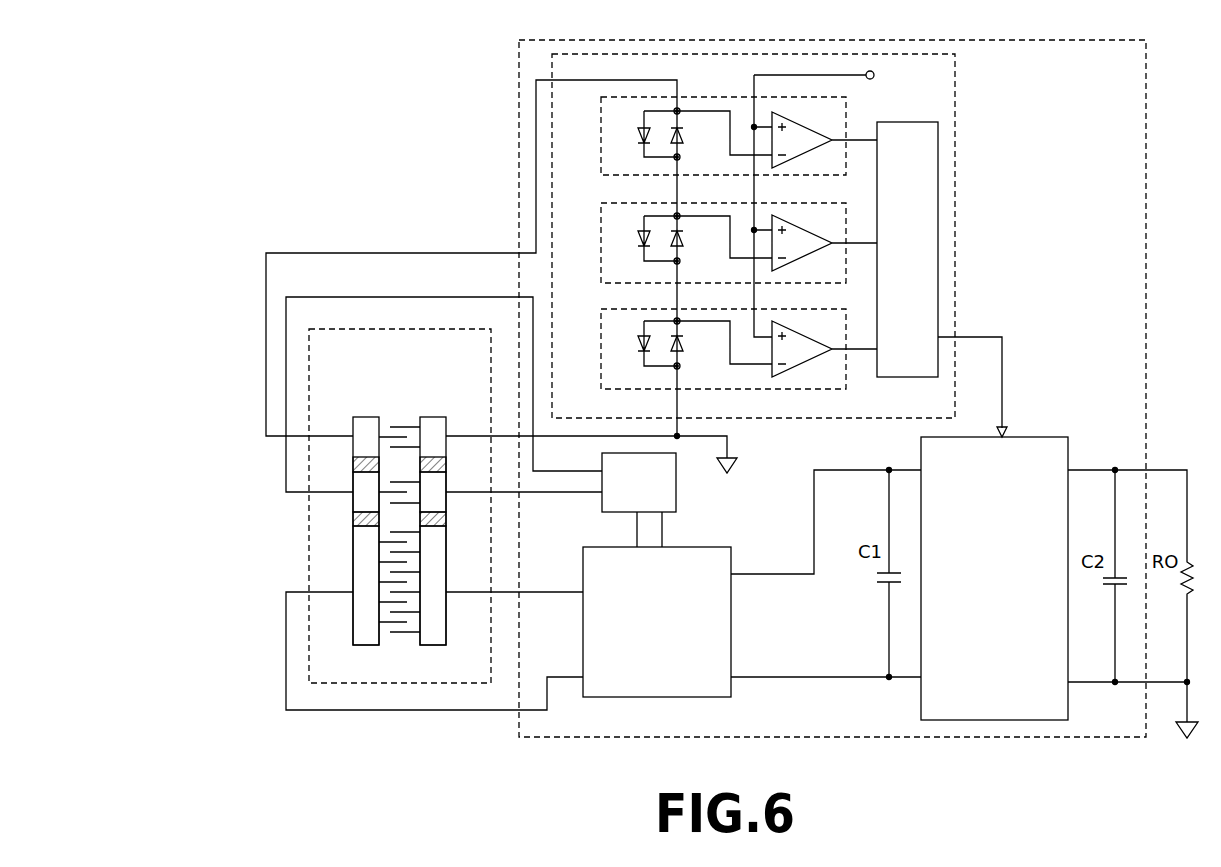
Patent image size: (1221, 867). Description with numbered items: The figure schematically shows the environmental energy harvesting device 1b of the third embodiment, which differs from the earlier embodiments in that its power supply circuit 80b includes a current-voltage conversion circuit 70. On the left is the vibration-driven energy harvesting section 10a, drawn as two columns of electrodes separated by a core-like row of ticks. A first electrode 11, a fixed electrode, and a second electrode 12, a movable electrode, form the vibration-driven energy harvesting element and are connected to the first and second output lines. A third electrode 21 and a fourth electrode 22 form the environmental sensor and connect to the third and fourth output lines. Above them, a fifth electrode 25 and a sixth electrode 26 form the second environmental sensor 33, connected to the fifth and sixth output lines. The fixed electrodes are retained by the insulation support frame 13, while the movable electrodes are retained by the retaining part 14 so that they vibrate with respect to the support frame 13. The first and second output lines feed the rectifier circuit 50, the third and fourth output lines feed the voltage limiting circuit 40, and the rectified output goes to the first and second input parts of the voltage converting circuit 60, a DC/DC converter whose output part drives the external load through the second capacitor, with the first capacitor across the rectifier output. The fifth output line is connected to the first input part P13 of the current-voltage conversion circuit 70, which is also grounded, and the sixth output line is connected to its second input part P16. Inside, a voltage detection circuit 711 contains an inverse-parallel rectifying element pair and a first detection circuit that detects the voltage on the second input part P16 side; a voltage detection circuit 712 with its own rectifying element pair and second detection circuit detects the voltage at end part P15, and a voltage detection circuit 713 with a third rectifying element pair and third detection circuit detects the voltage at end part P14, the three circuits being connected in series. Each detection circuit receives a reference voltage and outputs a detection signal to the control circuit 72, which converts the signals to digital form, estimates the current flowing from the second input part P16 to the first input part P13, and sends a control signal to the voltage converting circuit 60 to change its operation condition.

The environmental energy harvesting device 1b is at (361, 169).
The power supply circuit 80b is at (552, 148).
The voltage detection circuit 711 is at (702, 117).
The voltage detection circuit 712 is at (702, 231).
The voltage detection circuit 713 is at (702, 351).
The second input part P16 is at (678, 108).
The end part P15 is at (677, 213).
The end part P14 is at (677, 318).
The first input part P13 is at (677, 369).
The current-voltage conversion circuit 70 is at (957, 150).
The control circuit 72 is at (938, 228).
The voltage converting circuit 60 is at (1048, 437).
The voltage limiting circuit 40 is at (676, 494).
The rectifier circuit 50 is at (731, 690).
The vibration-driven energy harvesting section 10a is at (363, 506).
The second environmental sensor 33 is at (399, 489).
The sixth electrode 26 is at (366, 415).
The fifth electrode 25 is at (430, 510).
The retaining part 14 is at (353, 465).
The support frame 13 is at (446, 465).
The fourth electrode 22 is at (353, 488).
The third electrode 21 is at (446, 488).
The second electrode 12 is at (366, 645).
The first electrode 11 is at (432, 645).